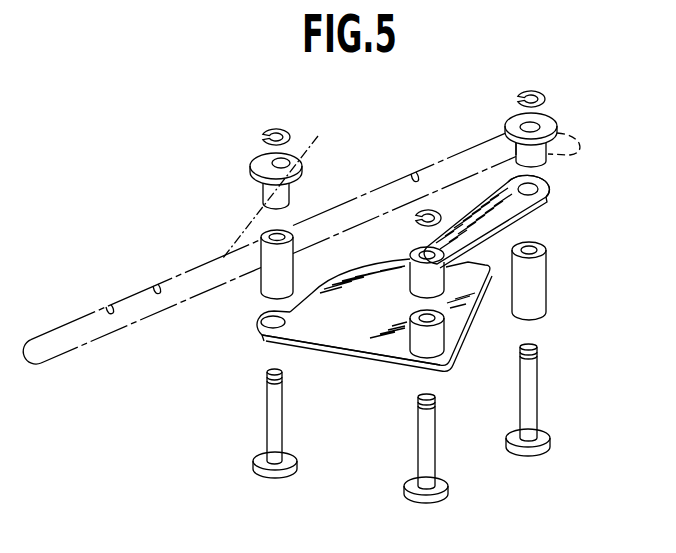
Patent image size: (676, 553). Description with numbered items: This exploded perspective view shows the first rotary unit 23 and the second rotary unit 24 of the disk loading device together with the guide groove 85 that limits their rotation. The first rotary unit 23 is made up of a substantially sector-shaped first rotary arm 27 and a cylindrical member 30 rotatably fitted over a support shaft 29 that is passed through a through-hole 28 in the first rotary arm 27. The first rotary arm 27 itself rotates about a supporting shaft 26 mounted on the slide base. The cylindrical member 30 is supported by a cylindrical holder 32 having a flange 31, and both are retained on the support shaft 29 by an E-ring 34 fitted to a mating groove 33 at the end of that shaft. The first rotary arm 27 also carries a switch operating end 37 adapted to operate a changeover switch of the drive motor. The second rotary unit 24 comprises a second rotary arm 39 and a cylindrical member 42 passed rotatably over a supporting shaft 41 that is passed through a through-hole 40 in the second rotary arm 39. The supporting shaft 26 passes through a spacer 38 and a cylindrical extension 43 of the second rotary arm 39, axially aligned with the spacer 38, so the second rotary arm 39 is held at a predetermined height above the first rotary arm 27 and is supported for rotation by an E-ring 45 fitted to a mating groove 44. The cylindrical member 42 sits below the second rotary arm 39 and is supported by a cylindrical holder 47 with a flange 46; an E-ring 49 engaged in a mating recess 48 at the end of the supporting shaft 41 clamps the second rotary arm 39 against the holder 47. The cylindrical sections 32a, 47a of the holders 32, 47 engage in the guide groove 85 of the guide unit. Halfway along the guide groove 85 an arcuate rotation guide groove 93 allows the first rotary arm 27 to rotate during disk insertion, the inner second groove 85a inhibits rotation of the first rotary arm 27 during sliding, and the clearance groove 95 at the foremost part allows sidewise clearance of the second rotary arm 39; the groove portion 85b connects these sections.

The first rotary unit 23 is at (262, 347).
The second rotary unit 24 is at (537, 232).
The supporting shaft 26 is at (423, 448).
The first rotary arm 27 is at (307, 332).
The through-hole 28 is at (262, 322).
The support shaft 29 is at (268, 426).
The cylindrical member 30 is at (273, 282).
The flange 31 is at (255, 163).
The cylindrical holder 32 is at (272, 195).
The cylindrical section 32a is at (290, 196).
The mating groove 33 is at (268, 380).
The E-ring 34 is at (284, 130).
The switch operating end 37 is at (475, 277).
The spacer 38 is at (415, 332).
The second rotary arm 39 is at (472, 222).
The through-hole 40 is at (548, 196).
The supporting shaft 41 is at (525, 400).
The cylindrical member 42 is at (540, 296).
The cylindrical extension 43 is at (415, 282).
The mating groove 44 is at (418, 405).
The E-ring 45 is at (418, 213).
The flange 46 is at (547, 121).
The cylindrical holder 47 is at (547, 158).
The cylindrical section 47a is at (503, 146).
The mating recess 48 is at (520, 360).
The E-ring 49 is at (523, 91).
The guide groove 85 is at (112, 306).
The second groove 85a is at (157, 285).
The notch 85b is at (415, 172).
The rotation guide groove 93 is at (285, 185).
The clearance groove 95 is at (580, 142).